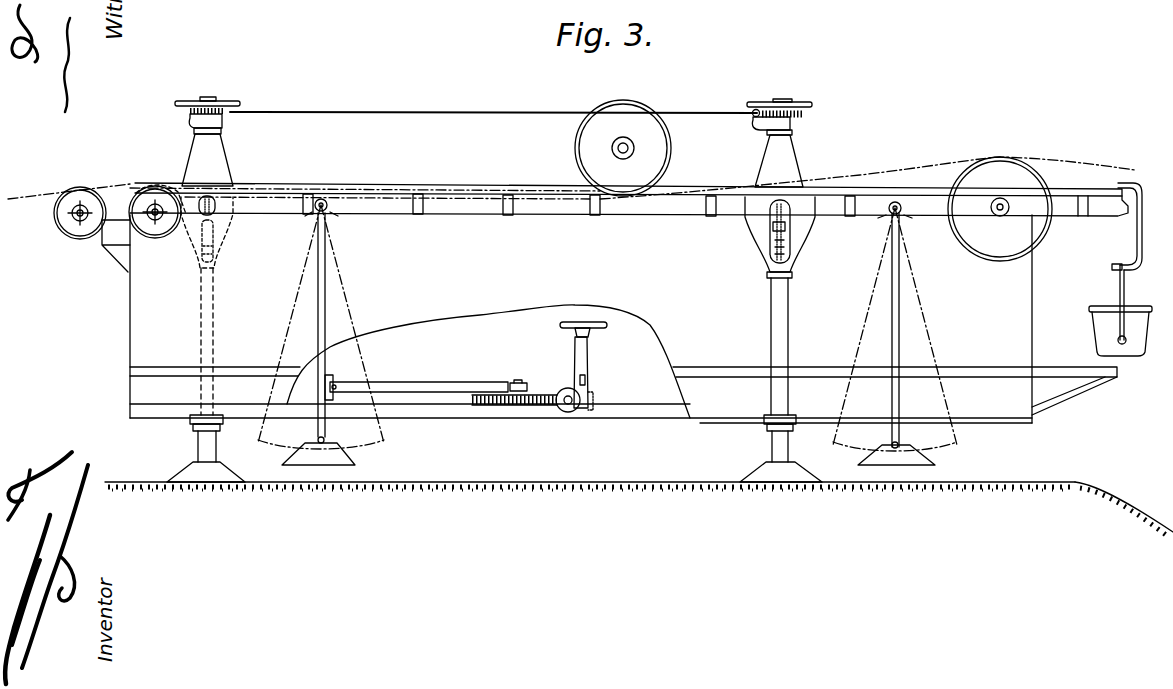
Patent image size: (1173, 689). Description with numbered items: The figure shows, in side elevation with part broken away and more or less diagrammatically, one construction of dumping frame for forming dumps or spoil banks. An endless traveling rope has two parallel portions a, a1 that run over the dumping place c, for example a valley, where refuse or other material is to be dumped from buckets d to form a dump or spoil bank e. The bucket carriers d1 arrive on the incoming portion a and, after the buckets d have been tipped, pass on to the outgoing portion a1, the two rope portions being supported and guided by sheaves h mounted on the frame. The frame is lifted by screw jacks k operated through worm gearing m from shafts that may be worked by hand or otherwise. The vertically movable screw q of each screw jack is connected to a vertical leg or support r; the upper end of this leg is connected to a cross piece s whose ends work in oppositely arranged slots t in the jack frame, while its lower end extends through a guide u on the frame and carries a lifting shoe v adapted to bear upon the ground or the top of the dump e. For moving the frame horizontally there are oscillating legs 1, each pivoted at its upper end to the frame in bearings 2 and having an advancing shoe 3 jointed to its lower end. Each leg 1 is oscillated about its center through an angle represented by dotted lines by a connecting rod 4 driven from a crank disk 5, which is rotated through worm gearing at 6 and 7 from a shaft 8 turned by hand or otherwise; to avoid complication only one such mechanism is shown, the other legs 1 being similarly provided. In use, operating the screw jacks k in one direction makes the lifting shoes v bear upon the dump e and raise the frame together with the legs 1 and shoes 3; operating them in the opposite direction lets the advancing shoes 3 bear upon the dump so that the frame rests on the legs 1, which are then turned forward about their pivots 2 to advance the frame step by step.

The incoming portion of endless traveling rope a is at (304, 184).
The outgoing portion of endless traveling rope a1 is at (589, 172).
The sheaves h is at (553, 184).
The worm gearing m is at (223, 115).
The screw jacks k is at (213, 152).
The vertically movable screw q is at (222, 205).
The cross piece s is at (216, 235).
The slots t is at (218, 262).
The vertical leg or support r is at (213, 322).
The guide u is at (190, 432).
The lifting shoe v is at (494, 457).
The oscillating legs 1 is at (324, 359).
The pivot bearings 2 is at (326, 211).
The advancing shoe 3 is at (348, 462).
The connecting rod 4 is at (416, 386).
The crank disk 5 is at (540, 397).
The worm gearing 6 is at (562, 411).
The worm gearing 7 is at (580, 410).
The shaft 8 is at (588, 382).
The buckets d is at (1095, 333).
The bucket carriers d1 is at (1141, 182).
The dump or spoil bank e is at (593, 474).
The dumping place c is at (1124, 510).